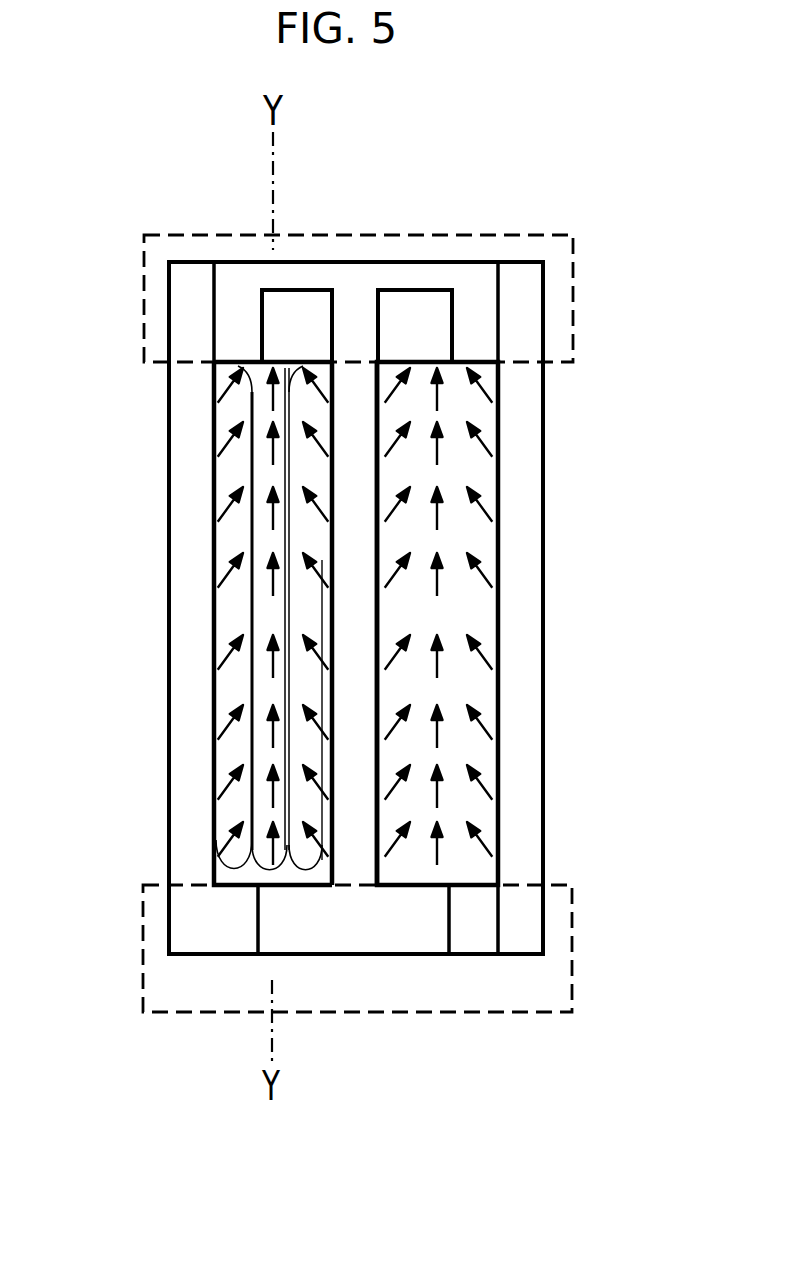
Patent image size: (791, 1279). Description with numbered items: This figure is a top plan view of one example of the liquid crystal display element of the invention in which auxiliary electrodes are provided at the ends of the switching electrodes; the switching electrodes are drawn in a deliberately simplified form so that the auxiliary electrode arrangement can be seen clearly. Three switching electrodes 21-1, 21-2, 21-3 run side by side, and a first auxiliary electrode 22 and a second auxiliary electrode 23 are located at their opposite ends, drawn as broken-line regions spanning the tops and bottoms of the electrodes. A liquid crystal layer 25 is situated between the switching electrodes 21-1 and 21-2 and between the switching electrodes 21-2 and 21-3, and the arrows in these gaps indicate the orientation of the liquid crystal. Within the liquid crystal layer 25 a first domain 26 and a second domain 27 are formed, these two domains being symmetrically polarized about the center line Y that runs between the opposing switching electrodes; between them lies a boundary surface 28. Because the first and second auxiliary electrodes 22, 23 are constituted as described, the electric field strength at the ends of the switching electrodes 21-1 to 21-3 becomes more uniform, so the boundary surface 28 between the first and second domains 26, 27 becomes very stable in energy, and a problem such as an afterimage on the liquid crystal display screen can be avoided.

The switching electrode 21-1 is at (182, 690).
The switching electrode 21-2 is at (350, 797).
The switching electrode 21-3 is at (532, 636).
The first auxiliary electrode 22 is at (573, 320).
The second auxiliary electrode 23 is at (573, 968).
The liquid crystal layer 25 is at (493, 538).
The first domain 26 is at (218, 887).
The second domain 27 is at (307, 885).
The boundary surface 28 is at (245, 887).